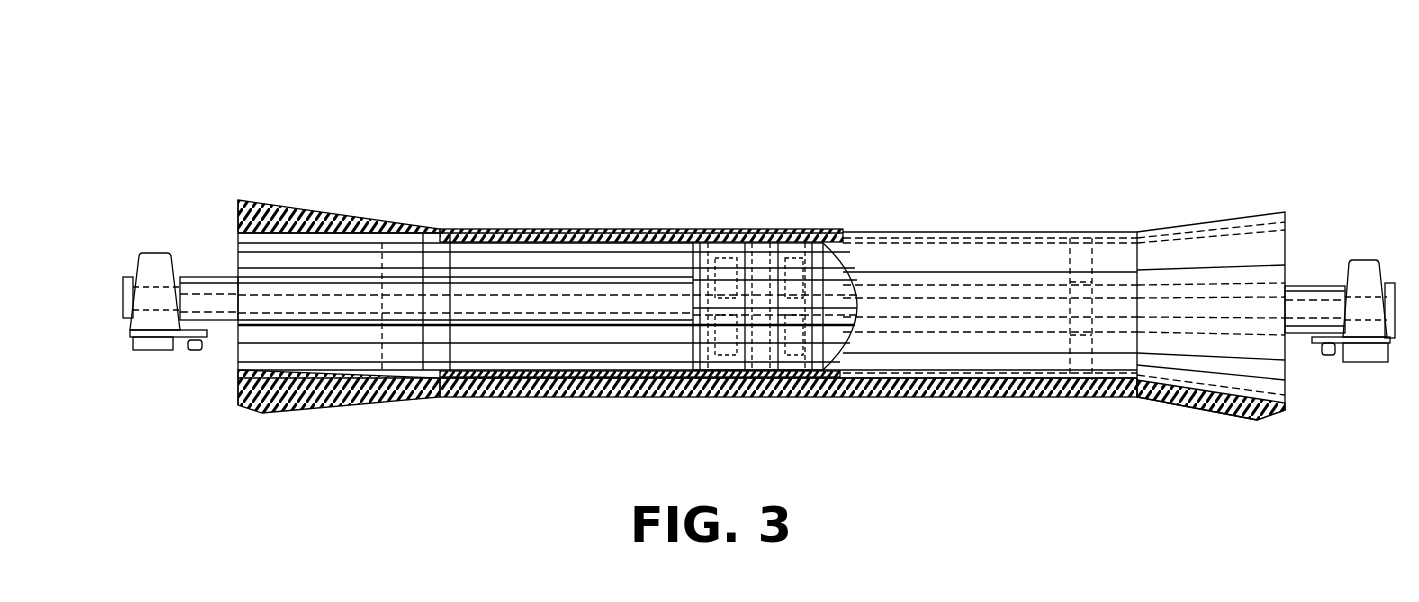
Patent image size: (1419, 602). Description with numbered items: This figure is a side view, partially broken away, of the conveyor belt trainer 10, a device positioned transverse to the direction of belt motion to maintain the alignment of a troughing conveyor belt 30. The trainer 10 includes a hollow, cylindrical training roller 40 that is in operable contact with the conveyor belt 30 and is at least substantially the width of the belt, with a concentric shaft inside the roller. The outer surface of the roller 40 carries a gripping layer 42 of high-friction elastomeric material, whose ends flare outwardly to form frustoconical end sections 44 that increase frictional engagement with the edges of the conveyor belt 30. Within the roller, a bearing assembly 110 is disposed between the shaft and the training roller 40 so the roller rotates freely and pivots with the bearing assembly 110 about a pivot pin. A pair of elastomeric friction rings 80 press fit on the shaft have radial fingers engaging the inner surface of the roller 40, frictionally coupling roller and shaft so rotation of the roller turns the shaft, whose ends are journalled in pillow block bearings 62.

The conveyor belt trainer 10 is at (935, 130).
The conveyor belt 30 is at (850, 398).
The training roller 40 is at (524, 231).
The gripping layer 42 is at (612, 231).
The frustoconical end sections 44 is at (292, 207).
The pillow block bearing 62 is at (1358, 268).
The friction rings 80 is at (432, 236).
The bearing assembly 110 is at (773, 234).